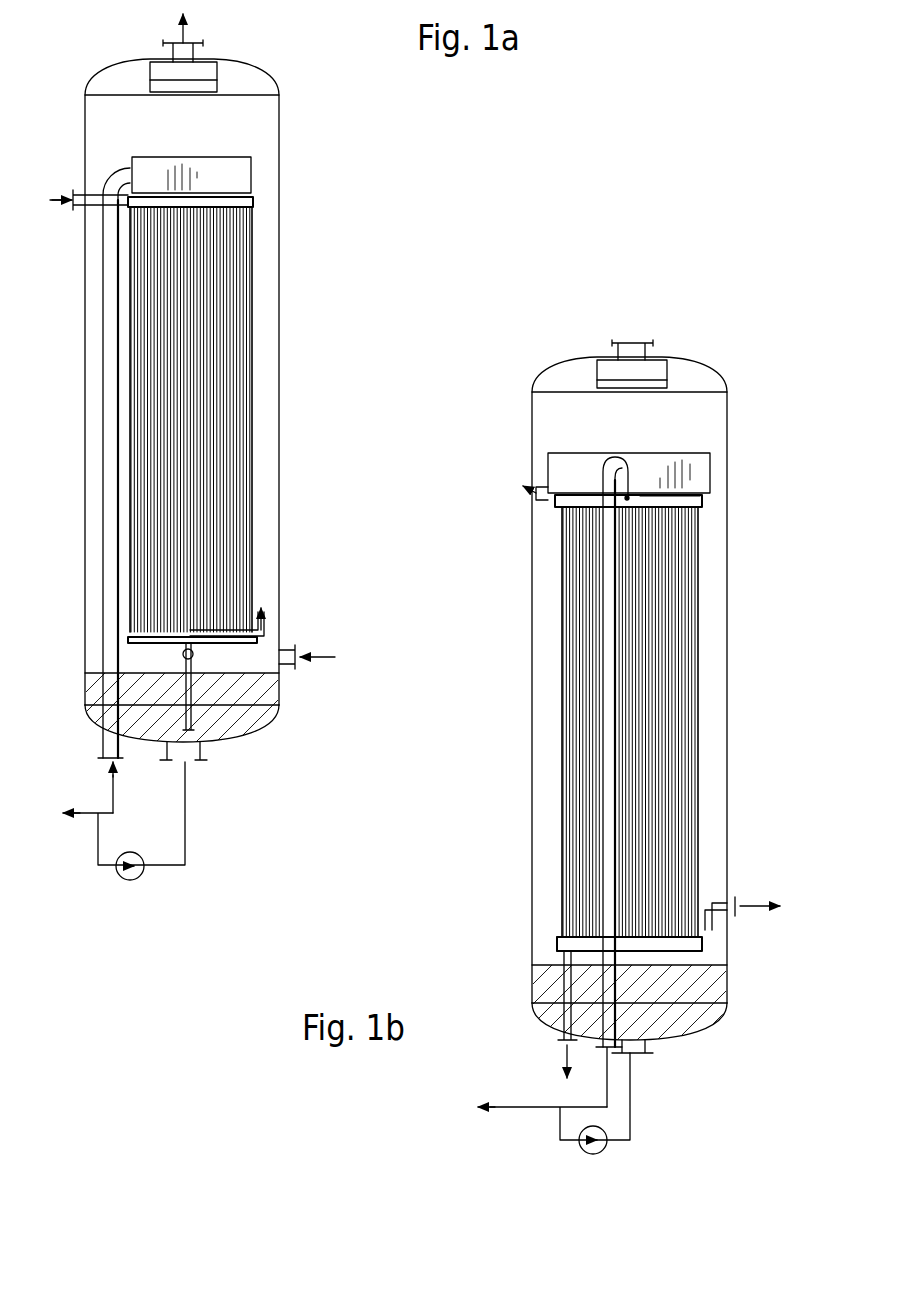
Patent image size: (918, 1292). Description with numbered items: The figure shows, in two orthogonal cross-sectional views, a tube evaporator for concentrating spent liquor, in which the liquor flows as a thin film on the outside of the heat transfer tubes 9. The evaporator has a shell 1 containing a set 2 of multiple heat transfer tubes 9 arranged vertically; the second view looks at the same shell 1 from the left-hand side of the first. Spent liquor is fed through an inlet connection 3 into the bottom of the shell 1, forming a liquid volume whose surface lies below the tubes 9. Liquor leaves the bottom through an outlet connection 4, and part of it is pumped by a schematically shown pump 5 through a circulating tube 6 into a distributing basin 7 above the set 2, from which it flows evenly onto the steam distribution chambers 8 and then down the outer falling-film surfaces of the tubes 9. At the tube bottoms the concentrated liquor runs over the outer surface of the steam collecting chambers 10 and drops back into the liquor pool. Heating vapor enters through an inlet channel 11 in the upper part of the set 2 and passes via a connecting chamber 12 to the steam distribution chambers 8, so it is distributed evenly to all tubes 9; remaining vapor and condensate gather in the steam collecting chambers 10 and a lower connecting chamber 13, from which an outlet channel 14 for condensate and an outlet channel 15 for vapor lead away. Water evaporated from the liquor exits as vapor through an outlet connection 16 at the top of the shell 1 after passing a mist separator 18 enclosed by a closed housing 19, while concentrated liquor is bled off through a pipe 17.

In FIG. 1A, the shell 1 is at (280, 268).
In FIG. 1B, the shell 1 is at (728, 682).
In FIG. 1A, the set 2 is at (252, 398).
In FIG. 1B, the set 2 is at (702, 621).
In FIG. 1A, the inlet connection 3 is at (298, 670).
In FIG. 1A, the outlet connection 4 is at (205, 750).
In FIG. 1B, the outlet connection 4 is at (648, 1046).
In FIG. 1A, the pump 5 is at (140, 858).
In FIG. 1B, the pump 5 is at (605, 1128).
In FIG. 1A, the circulating tube 6 is at (103, 742).
In FIG. 1B, the circulating tube 6 is at (607, 1043).
In FIG. 1A, the distributing basin 7 is at (228, 192).
In FIG. 1B, the distributing basin 7 is at (570, 471).
In FIG. 1A, the steam distribution chambers 8 is at (250, 207).
In FIG. 1B, the steam distribution chambers 8 is at (628, 501).
In FIG. 1A, the heat transfer tubes 9 is at (250, 303).
In FIG. 1A, the steam collecting chambers 10 is at (262, 640).
In FIG. 1B, the steam collecting chambers 10 is at (702, 940).
In FIG. 1A, the inlet channel 11 is at (96, 212).
In FIG. 1B, the inlet channel 11 is at (628, 496).
In FIG. 1A, the connecting chamber 12 is at (118, 196).
In FIG. 1B, the connecting chamber 12 is at (690, 498).
In FIG. 1A, the lower connecting chamber 13 is at (195, 653).
In FIG. 1B, the lower connecting chamber 13 is at (557, 952).
In FIG. 1A, the outlet channel for condensate 14 is at (184, 656).
In FIG. 1B, the outlet channel for condensate 14 is at (562, 1035).
In FIG. 1A, the outlet channel for vapor 15 is at (264, 608).
In FIG. 1B, the outlet channel for vapor 15 is at (523, 492).
In FIG. 1A, the outlet connection 16 is at (198, 52).
In FIG. 1B, the outlet connection 16 is at (650, 352).
In FIG. 1A, the pipe 17 is at (93, 815).
In FIG. 1B, the pipe 17 is at (532, 1108).
In FIG. 1A, the mist separator 18 is at (280, 97).
In FIG. 1B, the mist separator 18 is at (727, 382).
In FIG. 1A, the closed housing 19 is at (217, 72).
In FIG. 1B, the closed housing 19 is at (668, 372).